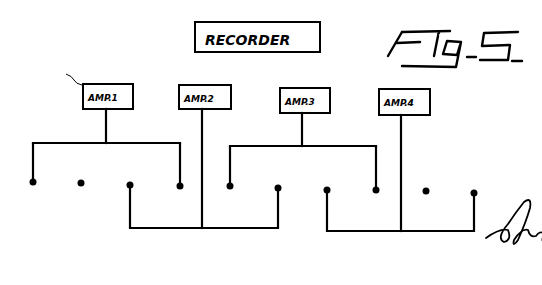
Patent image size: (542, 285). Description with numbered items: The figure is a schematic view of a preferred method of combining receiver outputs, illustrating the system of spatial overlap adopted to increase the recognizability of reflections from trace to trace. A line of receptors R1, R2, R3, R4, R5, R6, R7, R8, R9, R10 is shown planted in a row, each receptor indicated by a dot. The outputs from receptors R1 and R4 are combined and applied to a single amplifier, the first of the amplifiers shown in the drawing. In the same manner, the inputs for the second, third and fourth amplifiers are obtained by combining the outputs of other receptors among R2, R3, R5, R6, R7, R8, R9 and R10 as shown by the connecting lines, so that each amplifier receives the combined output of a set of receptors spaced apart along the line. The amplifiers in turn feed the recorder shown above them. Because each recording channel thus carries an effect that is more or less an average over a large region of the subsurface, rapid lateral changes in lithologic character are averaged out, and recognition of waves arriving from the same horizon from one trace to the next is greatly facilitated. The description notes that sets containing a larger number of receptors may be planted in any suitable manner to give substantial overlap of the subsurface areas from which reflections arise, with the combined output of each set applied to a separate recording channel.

The receptor R1 is at (28, 175).
The receptor R2 is at (78, 194).
The receptor R3 is at (163, 197).
The receptor R4 is at (175, 176).
The receptor R5 is at (227, 178).
The receptor R6 is at (245, 198).
The receptor R7 is at (361, 199).
The receptor R8 is at (371, 179).
The receptor R9 is at (423, 201).
The receptor R10 is at (443, 203).